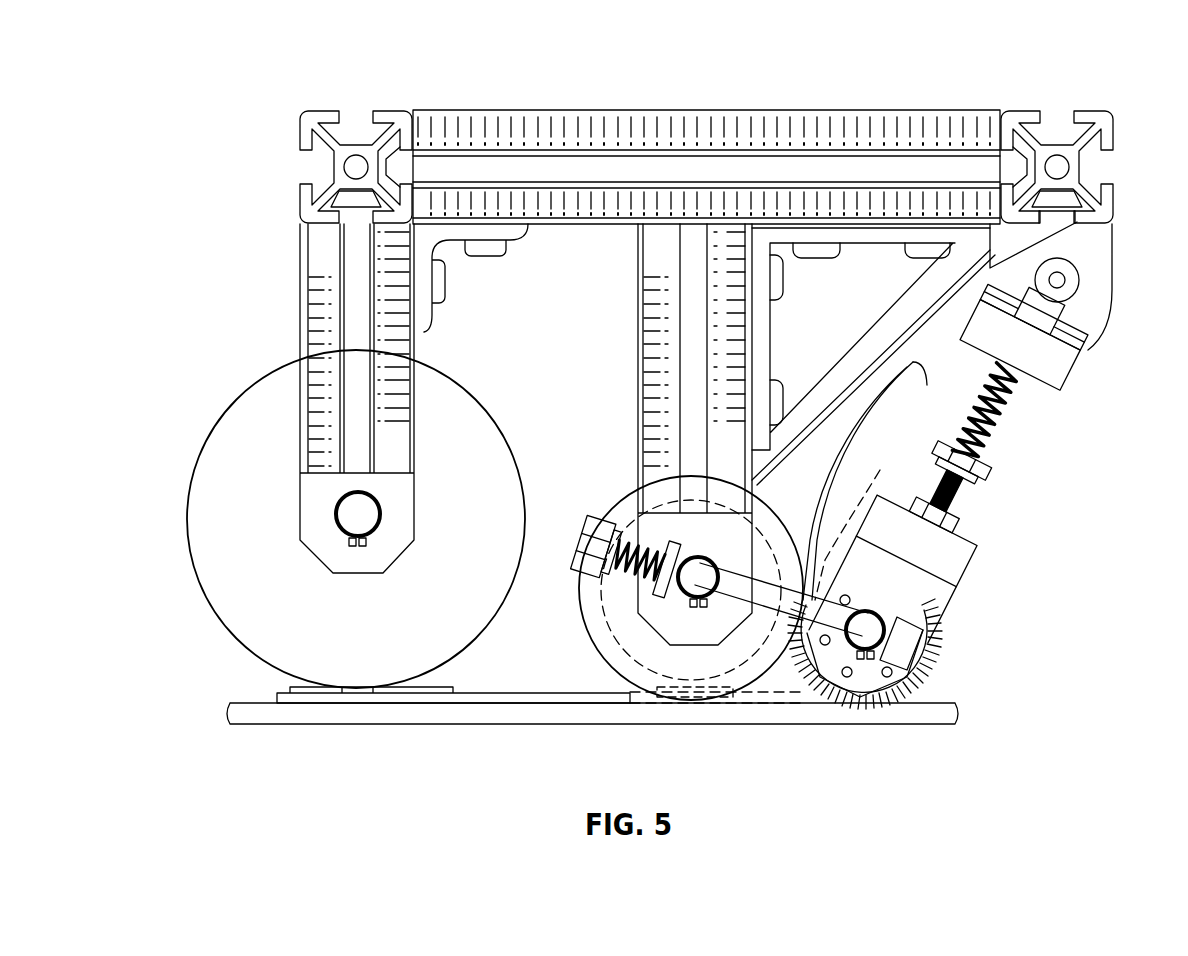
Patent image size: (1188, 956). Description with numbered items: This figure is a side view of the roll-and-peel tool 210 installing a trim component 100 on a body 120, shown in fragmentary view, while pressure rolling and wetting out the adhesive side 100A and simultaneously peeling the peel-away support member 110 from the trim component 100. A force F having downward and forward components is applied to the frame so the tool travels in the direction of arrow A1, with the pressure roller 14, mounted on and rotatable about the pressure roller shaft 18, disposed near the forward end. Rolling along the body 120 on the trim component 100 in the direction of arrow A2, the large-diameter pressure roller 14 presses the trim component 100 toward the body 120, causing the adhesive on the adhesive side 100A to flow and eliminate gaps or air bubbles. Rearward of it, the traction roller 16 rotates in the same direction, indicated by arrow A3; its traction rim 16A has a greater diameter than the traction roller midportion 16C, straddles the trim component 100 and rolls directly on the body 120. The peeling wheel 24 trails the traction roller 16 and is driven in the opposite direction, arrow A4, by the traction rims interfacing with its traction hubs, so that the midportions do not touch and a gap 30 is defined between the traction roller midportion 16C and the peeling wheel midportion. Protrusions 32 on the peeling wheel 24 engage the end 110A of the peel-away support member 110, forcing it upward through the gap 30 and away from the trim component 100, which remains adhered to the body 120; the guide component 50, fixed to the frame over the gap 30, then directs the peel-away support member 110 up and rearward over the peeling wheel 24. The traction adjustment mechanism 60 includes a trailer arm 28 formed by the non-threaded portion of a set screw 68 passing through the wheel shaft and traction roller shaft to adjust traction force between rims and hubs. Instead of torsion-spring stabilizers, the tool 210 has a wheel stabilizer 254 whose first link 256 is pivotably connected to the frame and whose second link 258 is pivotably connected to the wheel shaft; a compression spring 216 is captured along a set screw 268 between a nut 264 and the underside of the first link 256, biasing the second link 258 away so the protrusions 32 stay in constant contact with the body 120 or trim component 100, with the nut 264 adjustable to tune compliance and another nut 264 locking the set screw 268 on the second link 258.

The roll-and-peel tool 210 is at (291, 68).
The force F is at (503, 108).
The direction of forward movement A1 is at (570, 62).
The guide component 50 is at (960, 293).
The pressure roller 14 is at (334, 456).
The direction of rotation of pressure roller A2 is at (384, 644).
The pressure roller shaft 18 is at (350, 518).
The traction roller 16 is at (858, 415).
The traction rim 16A is at (638, 497).
The traction roller midportion 16C is at (841, 481).
The end of peel-away support member 110A is at (927, 394).
The peel-away support member 110 is at (863, 418).
The gap 30 is at (874, 500).
The first link 256 is at (1055, 365).
The compression spring 216 is at (1003, 400).
The set screw 268 is at (988, 450).
The nut 264 is at (980, 493).
The wheel stabilizer 254 is at (989, 493).
The second link 258 is at (968, 568).
The trailer arm 28 is at (892, 618).
The set screw 68 is at (845, 615).
The direction of rotation of traction roller A3 is at (704, 665).
The trim component 100 is at (290, 688).
The body 120 is at (258, 722).
The traction adjustment mechanism 60 is at (716, 700).
The protrusions 32 is at (808, 690).
The peeling wheel 24 is at (855, 682).
The adhesive side 100A is at (745, 638).
The direction of rotation of peeling wheel A4 is at (930, 696).